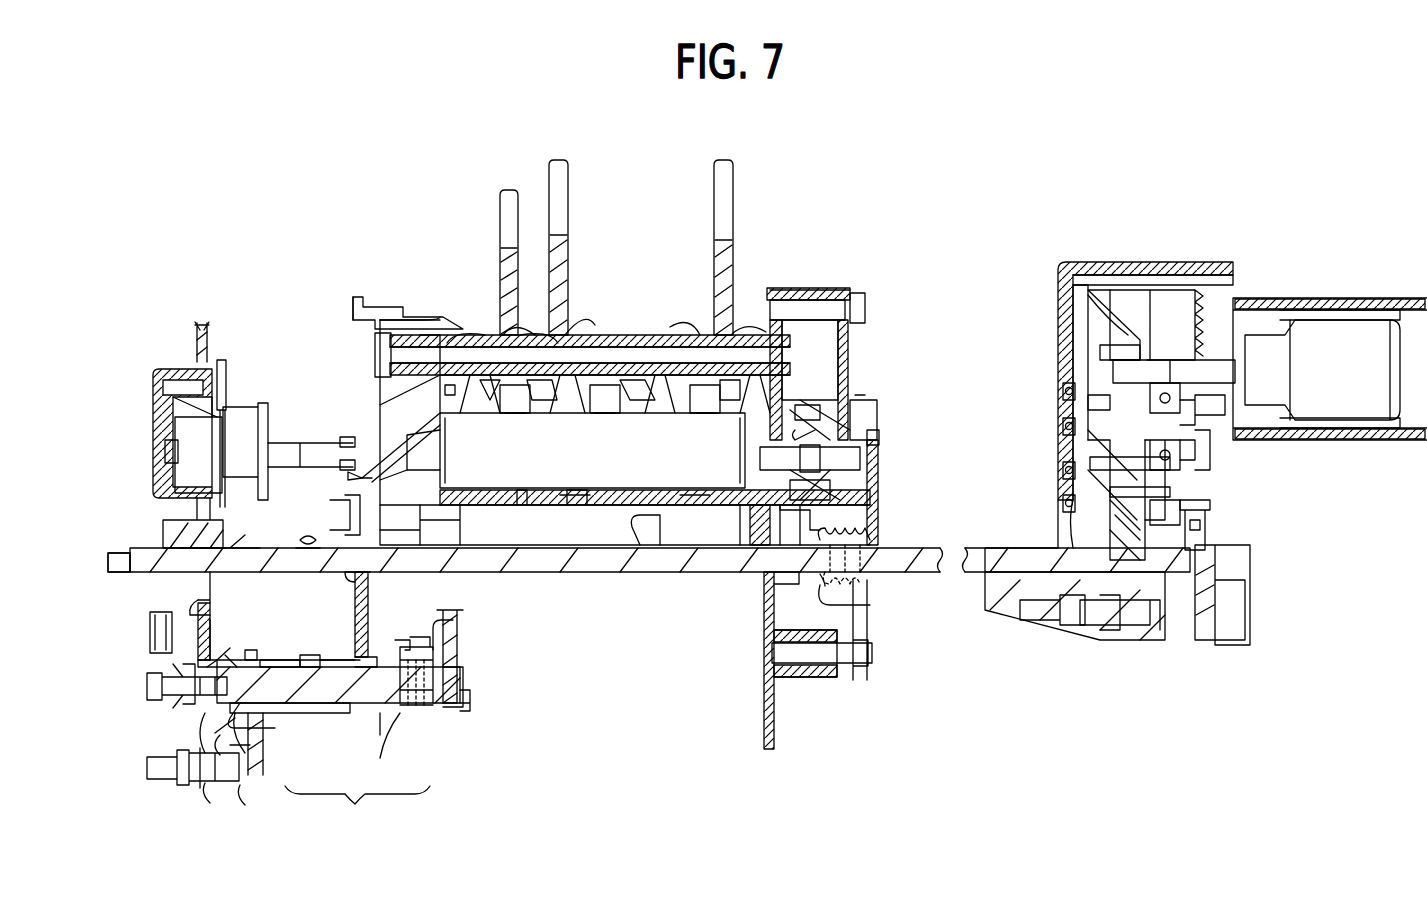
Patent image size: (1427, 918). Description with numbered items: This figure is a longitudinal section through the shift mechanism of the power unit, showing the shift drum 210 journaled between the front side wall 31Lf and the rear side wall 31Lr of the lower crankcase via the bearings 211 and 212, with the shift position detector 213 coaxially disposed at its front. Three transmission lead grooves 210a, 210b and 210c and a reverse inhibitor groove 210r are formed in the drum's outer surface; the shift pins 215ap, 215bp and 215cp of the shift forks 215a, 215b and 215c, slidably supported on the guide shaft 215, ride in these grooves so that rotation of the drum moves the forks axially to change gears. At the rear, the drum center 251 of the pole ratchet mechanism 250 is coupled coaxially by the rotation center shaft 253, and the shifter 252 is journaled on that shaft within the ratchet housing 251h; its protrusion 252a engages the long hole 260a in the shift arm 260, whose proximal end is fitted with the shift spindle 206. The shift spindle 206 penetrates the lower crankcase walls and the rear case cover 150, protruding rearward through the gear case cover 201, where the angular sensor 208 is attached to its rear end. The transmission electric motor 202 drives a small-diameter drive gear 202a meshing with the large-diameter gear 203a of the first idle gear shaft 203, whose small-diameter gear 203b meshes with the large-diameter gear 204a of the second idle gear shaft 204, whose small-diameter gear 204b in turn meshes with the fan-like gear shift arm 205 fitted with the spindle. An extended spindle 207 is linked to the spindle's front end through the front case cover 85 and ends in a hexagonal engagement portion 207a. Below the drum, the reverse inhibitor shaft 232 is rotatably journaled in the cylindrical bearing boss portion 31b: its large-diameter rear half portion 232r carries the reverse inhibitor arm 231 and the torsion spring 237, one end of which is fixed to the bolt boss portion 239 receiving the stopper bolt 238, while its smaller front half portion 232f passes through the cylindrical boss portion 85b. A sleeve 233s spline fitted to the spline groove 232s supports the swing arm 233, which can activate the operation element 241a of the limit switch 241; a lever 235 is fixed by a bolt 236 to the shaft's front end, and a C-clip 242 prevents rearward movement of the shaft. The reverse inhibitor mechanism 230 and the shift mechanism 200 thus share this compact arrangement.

The shift spindle 206 is at (640, 573).
The guide shaft 215 is at (635, 347).
The shift fork 215a is at (510, 190).
The shift fork 215b is at (558, 160).
The shift fork 215c is at (717, 163).
The drive unit 200 is at (811, 217).
The shift drum 210 is at (635, 510).
The reverse inhibitor groove 210r is at (455, 383).
The transmission lead groove 210a is at (502, 413).
The transmission lead groove 210b is at (580, 507).
The transmission lead groove 210c is at (700, 507).
The shift pin 215ap is at (520, 412).
The shift pin 215bp is at (600, 410).
The shift pin 215cp is at (705, 412).
The bearing 212 is at (757, 510).
The bearing 211 is at (377, 413).
The pole ratchet mechanism 250 is at (926, 345).
The drum center 251 is at (847, 385).
The shifter 252 is at (825, 423).
The protrusion 252a is at (874, 435).
The long hole 260a is at (888, 454).
The rotation center shaft 253 is at (856, 462).
The ratchet housing 251h is at (867, 501).
The shift arm 260 is at (877, 540).
The rear side wall 31Lr is at (760, 610).
The gear case cover 201 is at (1215, 495).
The transmission electric motor 202 is at (1333, 299).
The small-diameter drive gear 202a is at (1085, 317).
The large-diameter gear 203a is at (1085, 340).
The small-diameter gear 203b is at (1100, 378).
The first idle gear shaft 203 is at (1073, 408).
The small-diameter gear 204b is at (1073, 405).
The second idle gear shaft 204 is at (1066, 478).
The large-diameter gear 204a is at (1062, 518).
The gear shift arm 205 is at (1210, 505).
The angular sensor 208 is at (1253, 588).
The rear case cover 150 is at (1079, 640).
The shift position detector 213 is at (190, 425).
The stopper bolt 238 is at (332, 515).
The engagement portion 207a is at (108, 548).
The extended spindle 207 is at (247, 548).
The gearbox 230 is at (556, 662).
The front case cover 85 is at (190, 614).
The cylindrical boss portion 85b is at (233, 655).
The lever 235 is at (147, 637).
The bolt 236 is at (145, 688).
The sleeve 233s is at (272, 657).
The C-clip 242 is at (298, 657).
The bearing boss portion 31b is at (330, 660).
The front side wall 31Lf is at (370, 582).
The bolt boss portion 239 is at (430, 574).
The reverse inhibitor arm 231 is at (453, 647).
The torsion spring 237 is at (422, 710).
The spline groove 232s is at (295, 712).
The front half portion 232f is at (334, 783).
The rear half portion 232r is at (423, 783).
The reverse inhibitor shaft 232 is at (357, 804).
The limit switch 241 is at (172, 782).
The operation element 241a is at (220, 792).
The swing arm 233 is at (252, 775).